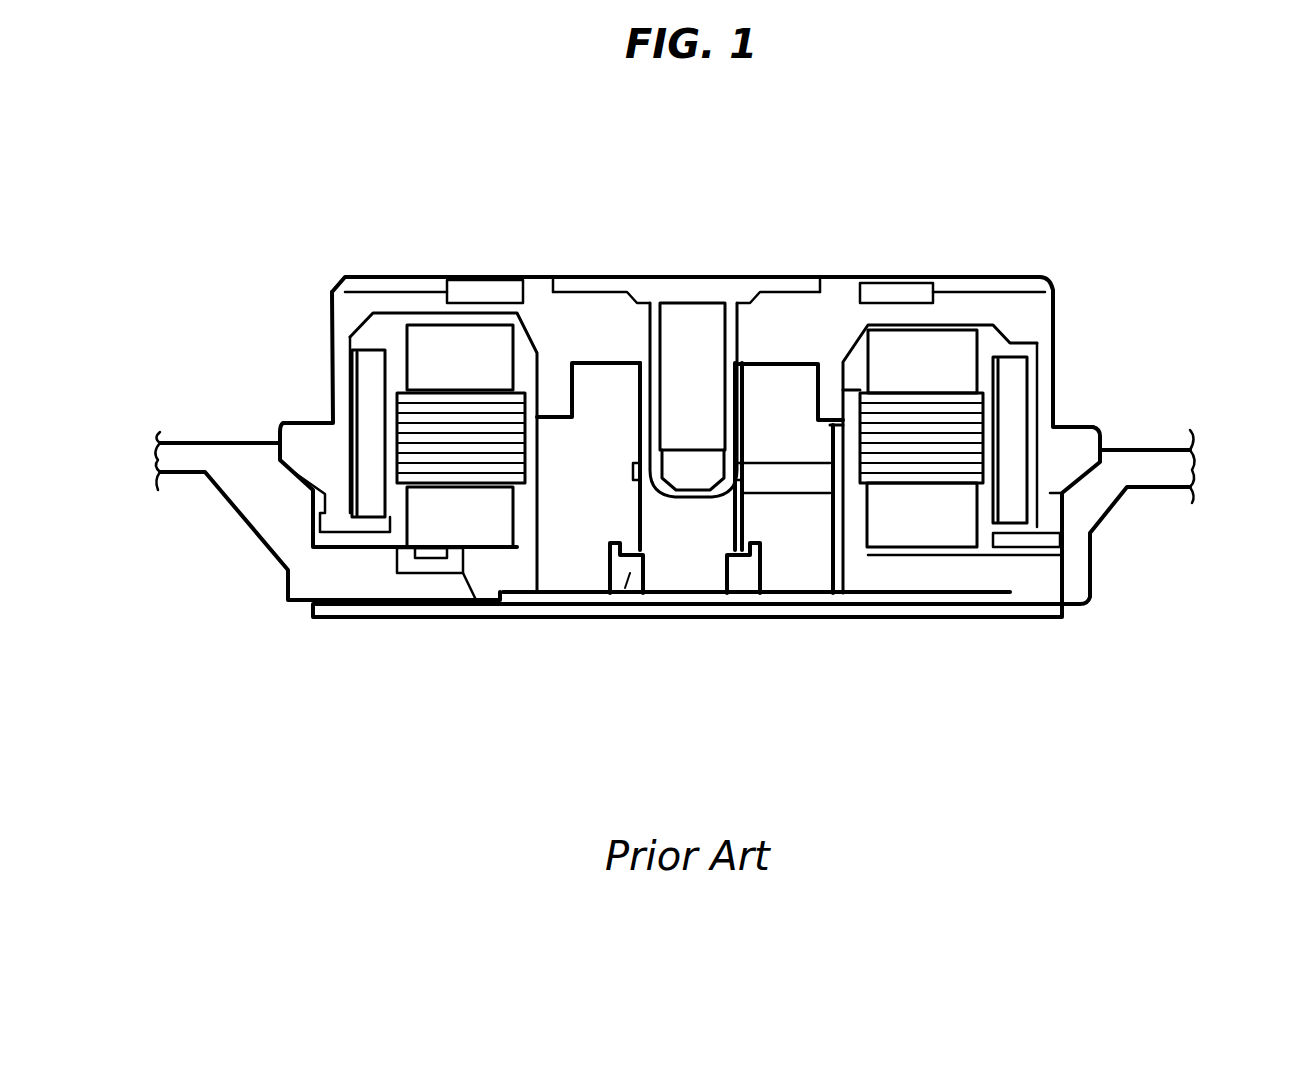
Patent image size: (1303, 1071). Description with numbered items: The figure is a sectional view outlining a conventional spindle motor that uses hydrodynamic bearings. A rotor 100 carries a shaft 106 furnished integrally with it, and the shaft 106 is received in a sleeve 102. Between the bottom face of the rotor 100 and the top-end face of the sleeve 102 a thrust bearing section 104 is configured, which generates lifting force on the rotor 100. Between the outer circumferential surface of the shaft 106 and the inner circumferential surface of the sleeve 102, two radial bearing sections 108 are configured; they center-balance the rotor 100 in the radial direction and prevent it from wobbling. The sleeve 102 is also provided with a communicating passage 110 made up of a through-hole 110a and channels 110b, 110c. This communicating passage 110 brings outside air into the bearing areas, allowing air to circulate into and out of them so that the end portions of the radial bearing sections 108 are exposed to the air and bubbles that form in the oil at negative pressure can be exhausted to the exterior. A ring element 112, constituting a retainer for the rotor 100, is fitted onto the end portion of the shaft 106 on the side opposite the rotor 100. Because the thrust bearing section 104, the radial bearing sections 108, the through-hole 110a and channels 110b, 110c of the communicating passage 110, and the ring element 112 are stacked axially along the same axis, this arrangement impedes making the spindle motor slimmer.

The rotor 100 is at (1000, 300).
The sleeve 102 is at (562, 460).
The thrust bearing section 104 is at (595, 360).
The shaft 106 is at (674, 573).
The radial bearing section 108 is at (742, 408).
The communicating passage 110 is at (885, 604).
The through-hole 110a is at (780, 483).
The channel 110b is at (797, 590).
The channel 110c is at (838, 463).
The ring element 112 is at (626, 594).